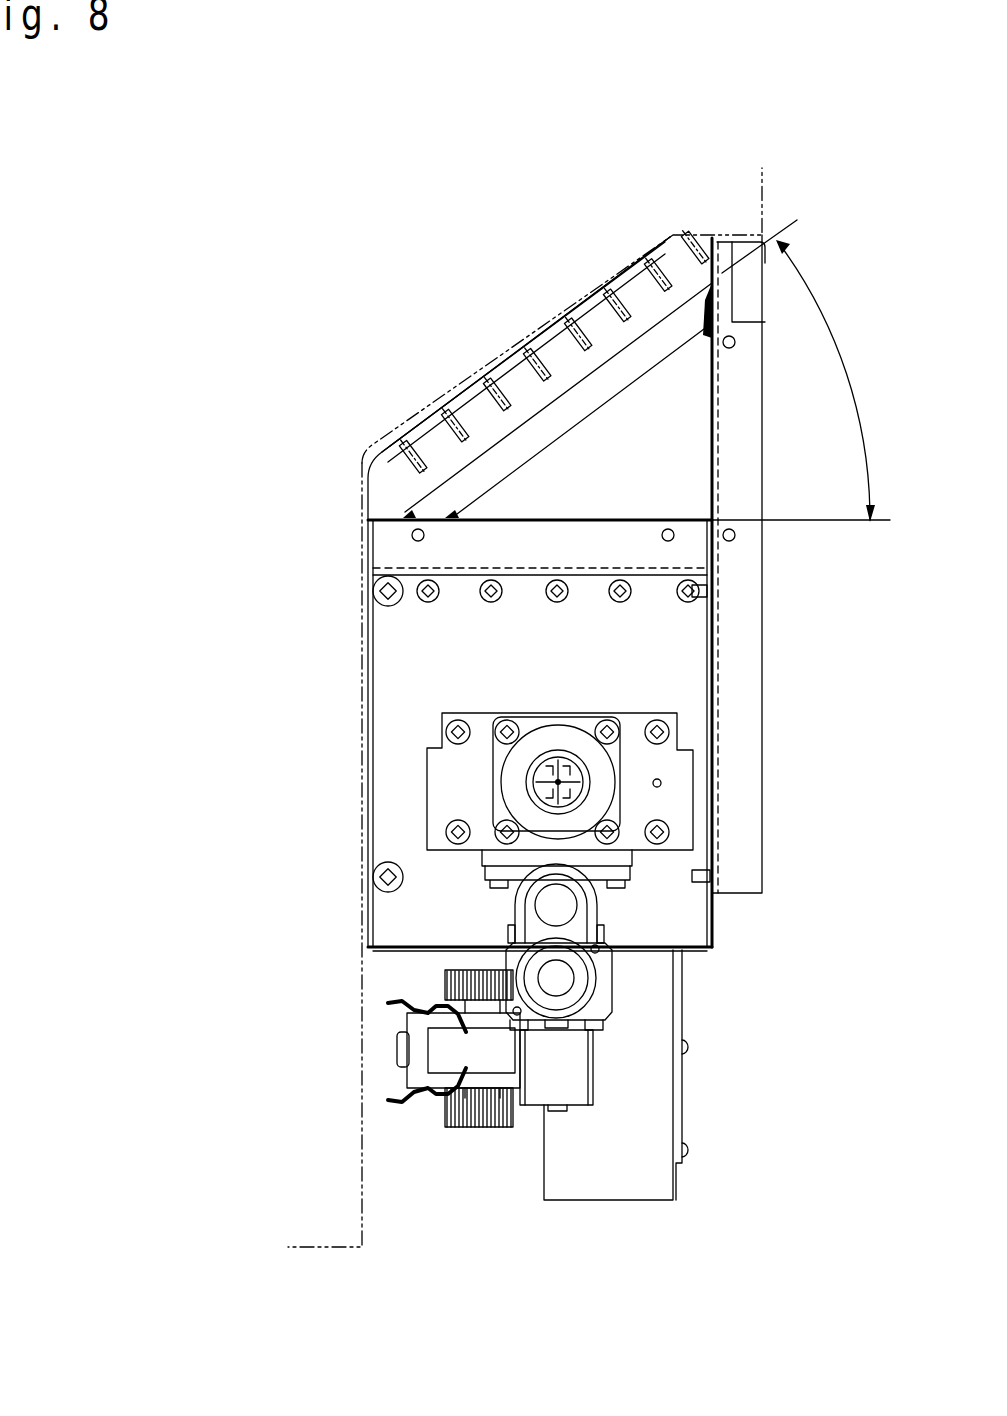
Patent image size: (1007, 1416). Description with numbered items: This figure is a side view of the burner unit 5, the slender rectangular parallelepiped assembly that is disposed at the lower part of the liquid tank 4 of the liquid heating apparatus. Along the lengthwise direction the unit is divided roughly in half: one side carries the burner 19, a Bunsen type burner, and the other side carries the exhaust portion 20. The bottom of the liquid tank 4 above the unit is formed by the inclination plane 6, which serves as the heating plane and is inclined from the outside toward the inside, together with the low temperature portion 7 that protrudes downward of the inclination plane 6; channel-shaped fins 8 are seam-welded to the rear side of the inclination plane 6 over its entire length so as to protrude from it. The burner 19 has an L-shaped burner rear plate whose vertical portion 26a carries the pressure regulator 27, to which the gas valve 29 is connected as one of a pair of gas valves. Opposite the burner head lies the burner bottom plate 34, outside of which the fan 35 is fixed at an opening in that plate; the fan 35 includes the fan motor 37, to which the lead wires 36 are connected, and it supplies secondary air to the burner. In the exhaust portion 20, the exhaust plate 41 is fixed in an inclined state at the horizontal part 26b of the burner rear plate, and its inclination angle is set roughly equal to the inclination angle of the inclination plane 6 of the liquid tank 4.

The liquid tank 4 is at (762, 178).
The burner unit 5 is at (764, 712).
The inclination plane 6 is at (491, 378).
The low temperature portion 7 is at (366, 1186).
The fins 8 is at (654, 286).
The burner 19 is at (397, 693).
The exhaust portion 20 is at (692, 498).
The vertical portion of burner rear plate 26a is at (697, 628).
The horizontal part of burner rear plate 26b is at (386, 557).
The pressure regulator 27 is at (500, 790).
The gas valve 29 is at (578, 1077).
The burner bottom plate 34 is at (400, 948).
The fan 35 is at (546, 1199).
The lead wires 36 is at (396, 1101).
The fan motor 37 is at (460, 1128).
The exhaust plate 41 is at (610, 392).